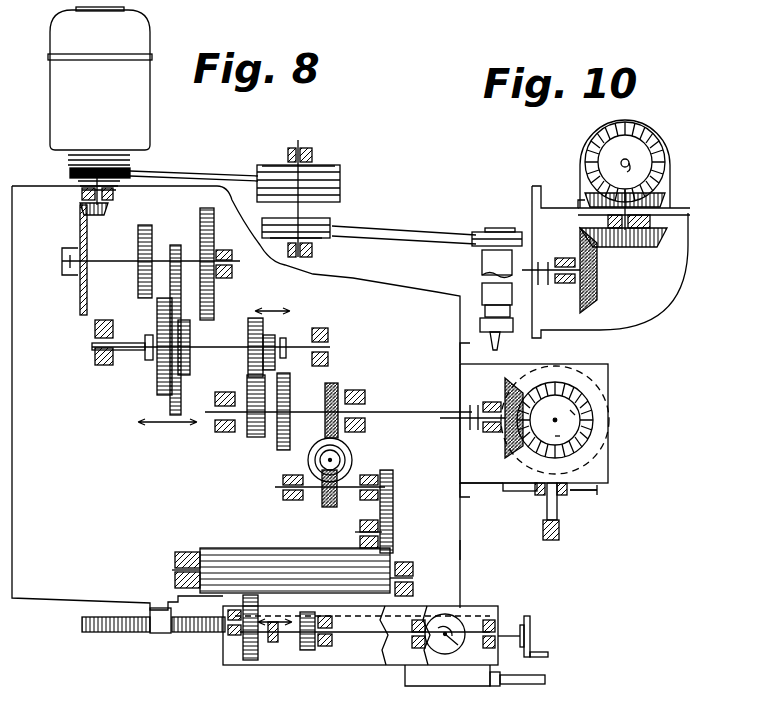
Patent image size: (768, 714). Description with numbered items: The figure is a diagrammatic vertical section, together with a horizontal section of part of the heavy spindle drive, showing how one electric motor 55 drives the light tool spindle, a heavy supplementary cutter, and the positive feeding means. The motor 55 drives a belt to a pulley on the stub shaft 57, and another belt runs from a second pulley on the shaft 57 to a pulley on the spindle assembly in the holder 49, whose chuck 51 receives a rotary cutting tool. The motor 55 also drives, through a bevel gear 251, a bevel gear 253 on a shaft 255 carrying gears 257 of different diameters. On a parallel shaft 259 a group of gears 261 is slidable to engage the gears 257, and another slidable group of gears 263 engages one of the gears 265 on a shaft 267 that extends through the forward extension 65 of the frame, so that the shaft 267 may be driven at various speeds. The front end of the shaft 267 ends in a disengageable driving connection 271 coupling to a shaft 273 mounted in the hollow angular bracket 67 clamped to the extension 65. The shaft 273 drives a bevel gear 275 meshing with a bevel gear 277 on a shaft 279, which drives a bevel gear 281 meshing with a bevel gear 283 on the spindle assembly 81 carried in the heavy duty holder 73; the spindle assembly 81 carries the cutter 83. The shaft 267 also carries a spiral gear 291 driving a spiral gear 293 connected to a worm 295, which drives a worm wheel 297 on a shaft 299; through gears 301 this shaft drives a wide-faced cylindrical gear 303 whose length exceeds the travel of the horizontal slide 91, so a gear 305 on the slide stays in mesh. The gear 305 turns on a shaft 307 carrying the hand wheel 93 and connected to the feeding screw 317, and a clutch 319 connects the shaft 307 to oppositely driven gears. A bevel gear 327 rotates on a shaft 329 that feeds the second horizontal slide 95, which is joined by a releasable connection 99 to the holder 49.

In FIG. 8, the electric motor 55 is at (150, 80).
In FIG. 8, the bevel gear 251 is at (106, 210).
In FIG. 8, the bevel gear 253 is at (80, 310).
In FIG. 8, the shaft 255 is at (110, 262).
In FIG. 8, the gears 257 is at (176, 245).
In FIG. 8, the parallel shaft 259 is at (213, 350).
In FIG. 8, the group of gears 261 is at (165, 395).
In FIG. 8, the group of gears 263 is at (265, 328).
In FIG. 8, the gears 265 is at (282, 450).
In FIG. 8, the shaft 267 is at (405, 412).
In FIG. 8, the disengageable driving connection 271 is at (468, 418).
In FIG. 8, the shaft 273 is at (500, 432).
In FIG. 10, the shaft 273 is at (560, 283).
In FIG. 8, the bevel gear 275 is at (507, 386).
In FIG. 10, the bevel gear 275 is at (598, 282).
In FIG. 8, the bevel gear 277 is at (556, 407).
In FIG. 10, the bevel gear 277 is at (625, 247).
In FIG. 8, the shaft 279 is at (550, 432).
In FIG. 10, the shaft 279 is at (643, 222).
In FIG. 10, the bevel gear 281 is at (663, 200).
In FIG. 8, the bevel gear 283 is at (590, 458).
In FIG. 10, the bevel gear 283 is at (648, 145).
In FIG. 8, the spiral gear 291 is at (337, 384).
In FIG. 8, the spiral gear 293 is at (322, 450).
In FIG. 8, the worm 295 is at (336, 460).
In FIG. 8, the worm wheel 297 is at (333, 508).
In FIG. 8, the shaft 299 is at (310, 488).
In FIG. 8, the gears 301 is at (393, 500).
In FIG. 8, the cylindrical gear 303 is at (232, 548).
In FIG. 8, the gear 305 is at (250, 660).
In FIG. 8, the shaft 307 is at (350, 632).
In FIG. 8, the feeding screw 317 is at (115, 632).
In FIG. 8, the clutch 319 is at (272, 640).
In FIG. 8, the horizontal slide 91 is at (338, 665).
In FIG. 8, the bevel gear 327 is at (420, 650).
In FIG. 8, the shaft 329 is at (462, 648).
In FIG. 8, the hand wheel 93 is at (532, 628).
In FIG. 8, the second horizontal slide 95 is at (440, 686).
In FIG. 8, the releasable connection 99 is at (535, 680).
In FIG. 8, the forward extension 65 is at (458, 544).
In FIG. 10, the forward extension 65 is at (533, 228).
In FIG. 8, the hollow angular bracket 67 is at (495, 484).
In FIG. 10, the hollow angular bracket 67 is at (655, 290).
In FIG. 8, the heavy duty holder 73 is at (592, 490).
In FIG. 10, the heavy duty holder 73 is at (580, 195).
In FIG. 8, the spindle assembly 81 is at (558, 508).
In FIG. 10, the spindle assembly 81 is at (624, 172).
In FIG. 8, the cutting tool 83 is at (560, 532).
In FIG. 8, the stub shaft 57 is at (298, 210).
In FIG. 10, the holder 49 is at (482, 264).
In FIG. 10, the chuck 51 is at (498, 343).